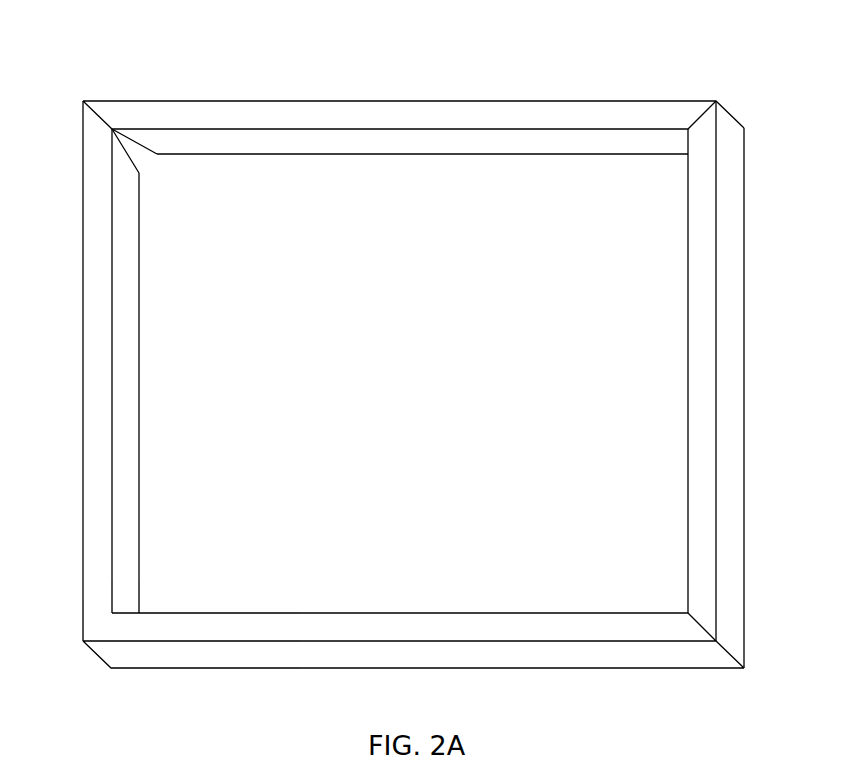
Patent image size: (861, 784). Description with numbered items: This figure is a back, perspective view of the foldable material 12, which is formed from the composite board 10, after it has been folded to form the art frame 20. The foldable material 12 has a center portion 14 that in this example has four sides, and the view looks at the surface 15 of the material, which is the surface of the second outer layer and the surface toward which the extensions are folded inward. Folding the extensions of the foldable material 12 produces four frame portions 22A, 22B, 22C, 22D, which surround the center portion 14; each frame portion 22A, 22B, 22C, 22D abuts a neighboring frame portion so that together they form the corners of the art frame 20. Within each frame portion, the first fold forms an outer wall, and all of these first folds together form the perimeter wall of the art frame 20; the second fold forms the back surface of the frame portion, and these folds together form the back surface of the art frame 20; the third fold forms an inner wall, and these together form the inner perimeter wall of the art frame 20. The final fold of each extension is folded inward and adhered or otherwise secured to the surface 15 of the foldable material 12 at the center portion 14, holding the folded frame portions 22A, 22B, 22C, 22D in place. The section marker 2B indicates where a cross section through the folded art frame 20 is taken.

The art frame 20 is at (414, 376).
The frame portion 22A is at (727, 461).
The frame portion 22B is at (356, 70).
The frame portion 22C is at (125, 278).
The frame portion 22D is at (593, 676).
The center portion 14 is at (436, 411).
The surface 15 is at (235, 177).
The composite board 10 is at (191, 648).
The foldable material 12 is at (203, 583).
The section line 2B is at (80, 398).